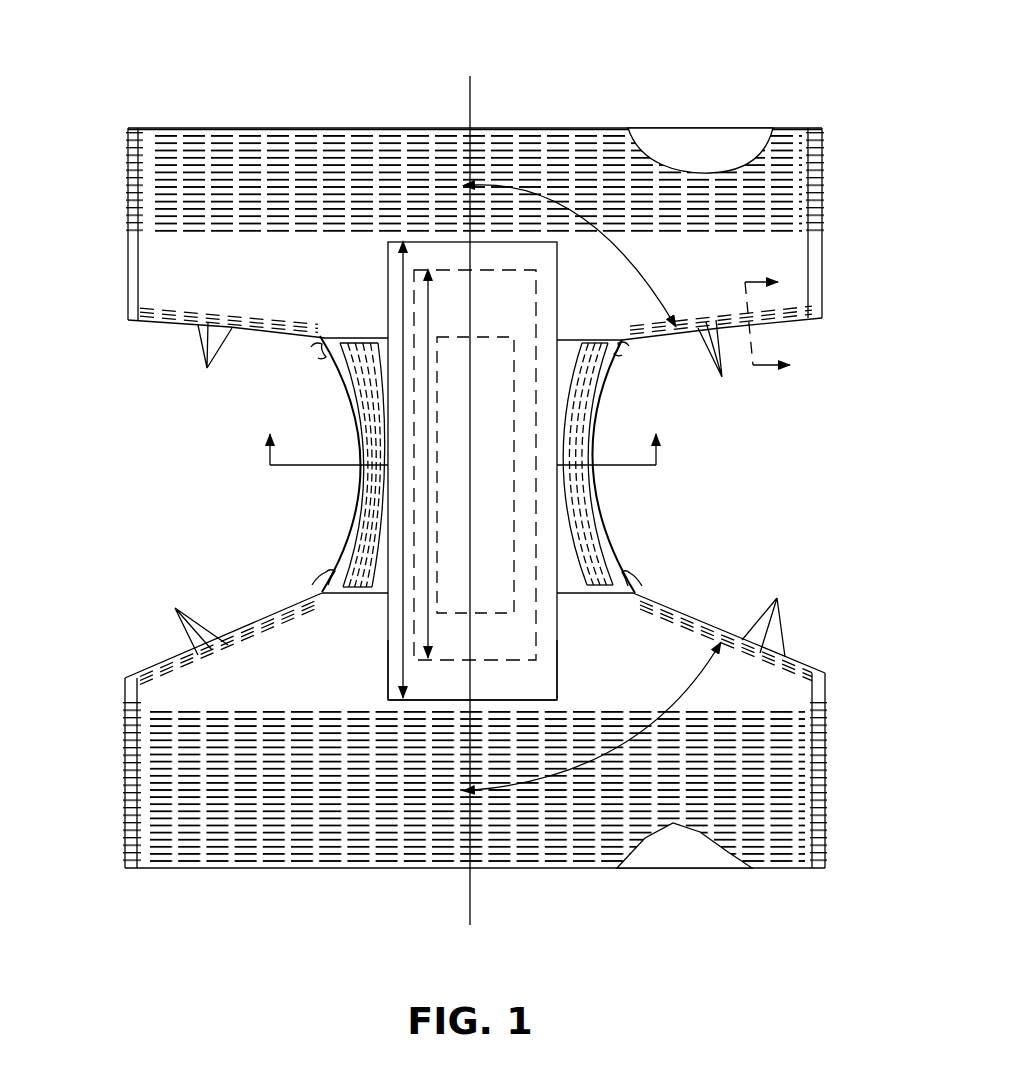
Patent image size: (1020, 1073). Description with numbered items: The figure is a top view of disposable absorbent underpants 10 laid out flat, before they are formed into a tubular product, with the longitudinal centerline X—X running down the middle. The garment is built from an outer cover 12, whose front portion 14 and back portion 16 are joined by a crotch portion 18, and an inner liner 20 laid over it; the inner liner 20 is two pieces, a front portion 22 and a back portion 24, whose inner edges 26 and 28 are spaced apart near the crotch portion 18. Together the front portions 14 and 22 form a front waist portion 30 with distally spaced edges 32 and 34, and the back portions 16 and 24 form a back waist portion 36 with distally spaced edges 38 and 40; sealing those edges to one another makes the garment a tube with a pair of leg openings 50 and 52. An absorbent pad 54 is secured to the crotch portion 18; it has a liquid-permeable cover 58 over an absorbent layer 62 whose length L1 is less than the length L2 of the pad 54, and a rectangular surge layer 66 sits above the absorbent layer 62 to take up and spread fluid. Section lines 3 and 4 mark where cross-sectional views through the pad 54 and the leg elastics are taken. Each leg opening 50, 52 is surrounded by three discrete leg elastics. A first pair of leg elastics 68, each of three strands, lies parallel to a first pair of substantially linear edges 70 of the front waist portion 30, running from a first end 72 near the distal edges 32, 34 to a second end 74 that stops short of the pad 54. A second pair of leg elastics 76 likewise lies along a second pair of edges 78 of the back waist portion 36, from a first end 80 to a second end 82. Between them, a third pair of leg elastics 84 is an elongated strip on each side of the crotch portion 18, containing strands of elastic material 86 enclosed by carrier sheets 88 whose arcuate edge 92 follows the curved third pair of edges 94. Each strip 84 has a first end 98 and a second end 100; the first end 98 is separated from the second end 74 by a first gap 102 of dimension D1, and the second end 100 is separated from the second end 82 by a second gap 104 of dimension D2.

The disposable absorbent underpants 10 is at (626, 46).
The outer cover 12 is at (740, 113).
The front portion of outer cover 14 is at (673, 140).
The back portion of outer cover 16 is at (675, 850).
The crotch portion 18 is at (575, 553).
The inner liner 20 is at (510, 152).
The front portion of inner liner 22 is at (582, 129).
The back portion of inner liner 24 is at (572, 835).
The inner edge of liner front portion 26 is at (567, 341).
The inner edge of liner back portion 28 is at (568, 598).
The front waist portion 30 is at (188, 134).
The distally spaced edge of front waist portion 32 is at (126, 243).
The distally spaced edge of front waist portion 34 is at (823, 245).
The back waist portion 36 is at (223, 852).
The distally spaced edge of back waist portion 38 is at (127, 778).
The distally spaced edge of back waist portion 40 is at (826, 762).
The leg opening 50 is at (800, 492).
The leg opening 52 is at (172, 533).
The absorbent pad 54 is at (545, 673).
The liquid-permeable cover 58 is at (392, 652).
The absorbent layer 62 is at (489, 650).
The surge layer 66 is at (477, 526).
The first pair of leg elastics 68 is at (465, 362).
The first pair of edges 70 is at (180, 325).
The first end of first leg elastics 72 is at (152, 325).
The second end of first leg elastics 74 is at (312, 339).
The second pair of leg elastics 76 is at (469, 617).
The second pair of edges 78 is at (183, 666).
The first end of second leg elastics 80 is at (136, 672).
The second end of second leg elastics 82 is at (316, 593).
The third pair of leg elastics 84 is at (357, 427).
The strand of elastic material 86 is at (358, 390).
The carrier sheet 88 is at (362, 535).
The arcuately configured edge 92 is at (360, 498).
The third pair of edges 94 is at (350, 478).
The first end of third leg elastics 98 is at (346, 342).
The second end of third leg elastics 100 is at (345, 590).
The first pair of gaps 102 is at (328, 328).
The second pair of gaps 104 is at (328, 606).
The section line 3 is at (466, 453).
The section line 4 is at (767, 324).
The longitudinal centerline X is at (467, 502).
The length of absorbent layer L1 is at (430, 308).
The length of absorbent pad L2 is at (400, 290).
The dimension of first gaps D1 is at (310, 357).
The dimension of second gaps D2 is at (315, 575).